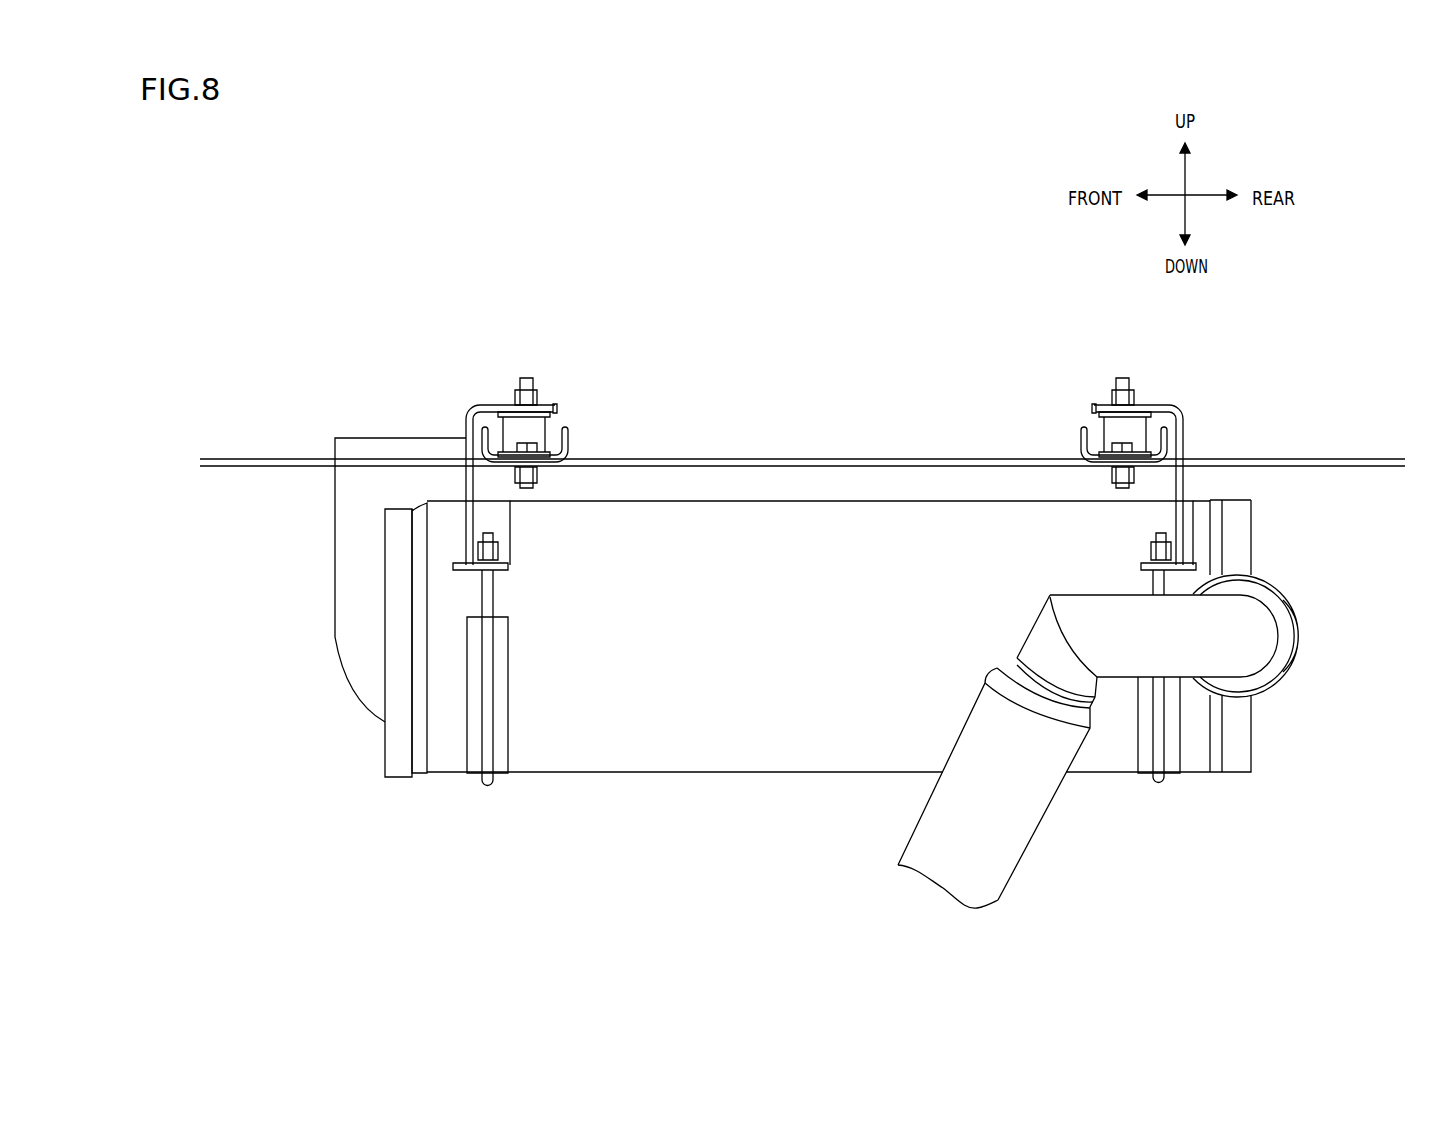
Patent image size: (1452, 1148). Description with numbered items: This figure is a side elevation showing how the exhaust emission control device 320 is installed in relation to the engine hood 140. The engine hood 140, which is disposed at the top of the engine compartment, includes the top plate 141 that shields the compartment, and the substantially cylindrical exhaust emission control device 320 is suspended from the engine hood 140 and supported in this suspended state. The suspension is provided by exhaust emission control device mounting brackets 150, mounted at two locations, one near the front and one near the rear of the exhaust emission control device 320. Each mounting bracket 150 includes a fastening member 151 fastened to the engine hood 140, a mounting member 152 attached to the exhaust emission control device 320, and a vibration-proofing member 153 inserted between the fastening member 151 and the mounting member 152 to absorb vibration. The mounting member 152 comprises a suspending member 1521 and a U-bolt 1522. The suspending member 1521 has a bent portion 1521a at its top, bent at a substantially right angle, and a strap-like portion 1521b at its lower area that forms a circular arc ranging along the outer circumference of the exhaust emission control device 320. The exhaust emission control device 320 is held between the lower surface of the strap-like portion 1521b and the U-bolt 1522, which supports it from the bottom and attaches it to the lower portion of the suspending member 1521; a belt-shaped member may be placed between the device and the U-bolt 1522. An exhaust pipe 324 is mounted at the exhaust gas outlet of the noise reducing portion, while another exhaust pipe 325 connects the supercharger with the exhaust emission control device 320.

The engine hood 140 is at (802, 427).
The top plate 141 is at (738, 460).
The exhaust emission control device mounting bracket 150 is at (548, 400).
The fastening member 151 is at (570, 445).
The mounting member 152 is at (836, 555).
The suspending member 1521 is at (841, 447).
The bent portion 1521a is at (490, 410).
The strap-like portion 1521b is at (490, 508).
The U-bolt 1522 is at (487, 640).
The vibration-proofing member 153 is at (543, 428).
The exhaust emission control device 320 is at (727, 758).
The exhaust pipe 324 is at (348, 535).
The exhaust pipe 325 is at (1250, 617).